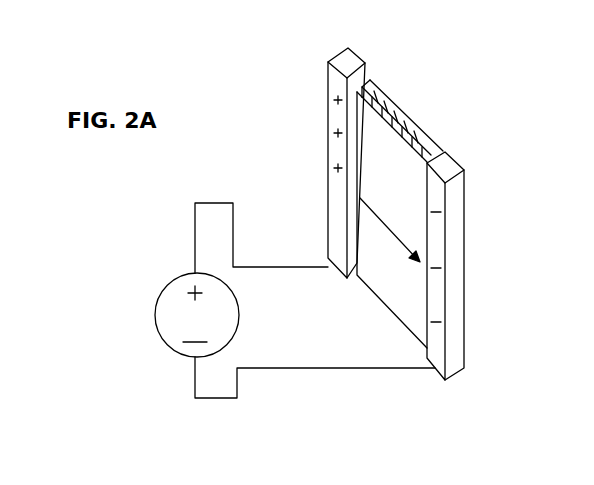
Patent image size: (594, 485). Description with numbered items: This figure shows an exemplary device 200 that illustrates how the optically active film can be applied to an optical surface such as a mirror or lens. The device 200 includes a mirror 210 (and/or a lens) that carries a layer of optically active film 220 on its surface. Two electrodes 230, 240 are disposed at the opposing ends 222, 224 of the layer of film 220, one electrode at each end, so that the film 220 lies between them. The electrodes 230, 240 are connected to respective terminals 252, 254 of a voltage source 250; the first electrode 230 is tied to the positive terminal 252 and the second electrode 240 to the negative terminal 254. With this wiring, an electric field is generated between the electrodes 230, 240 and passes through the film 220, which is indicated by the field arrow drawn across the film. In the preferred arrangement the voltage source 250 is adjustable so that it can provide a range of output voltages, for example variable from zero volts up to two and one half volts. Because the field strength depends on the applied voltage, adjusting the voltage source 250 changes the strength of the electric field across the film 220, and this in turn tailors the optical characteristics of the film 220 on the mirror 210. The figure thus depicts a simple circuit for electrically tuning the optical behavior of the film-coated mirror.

The device 200 is at (442, 90).
The mirror 210 is at (405, 130).
The layer of optically active film 220 is at (388, 118).
The end of the layer of film 222 is at (365, 207).
The end of the layer of film 224 is at (420, 310).
The electrode 230 is at (331, 78).
The electrode 240 is at (436, 200).
The voltage source 250 is at (158, 335).
The terminal 252 is at (192, 272).
The terminal 254 is at (193, 358).